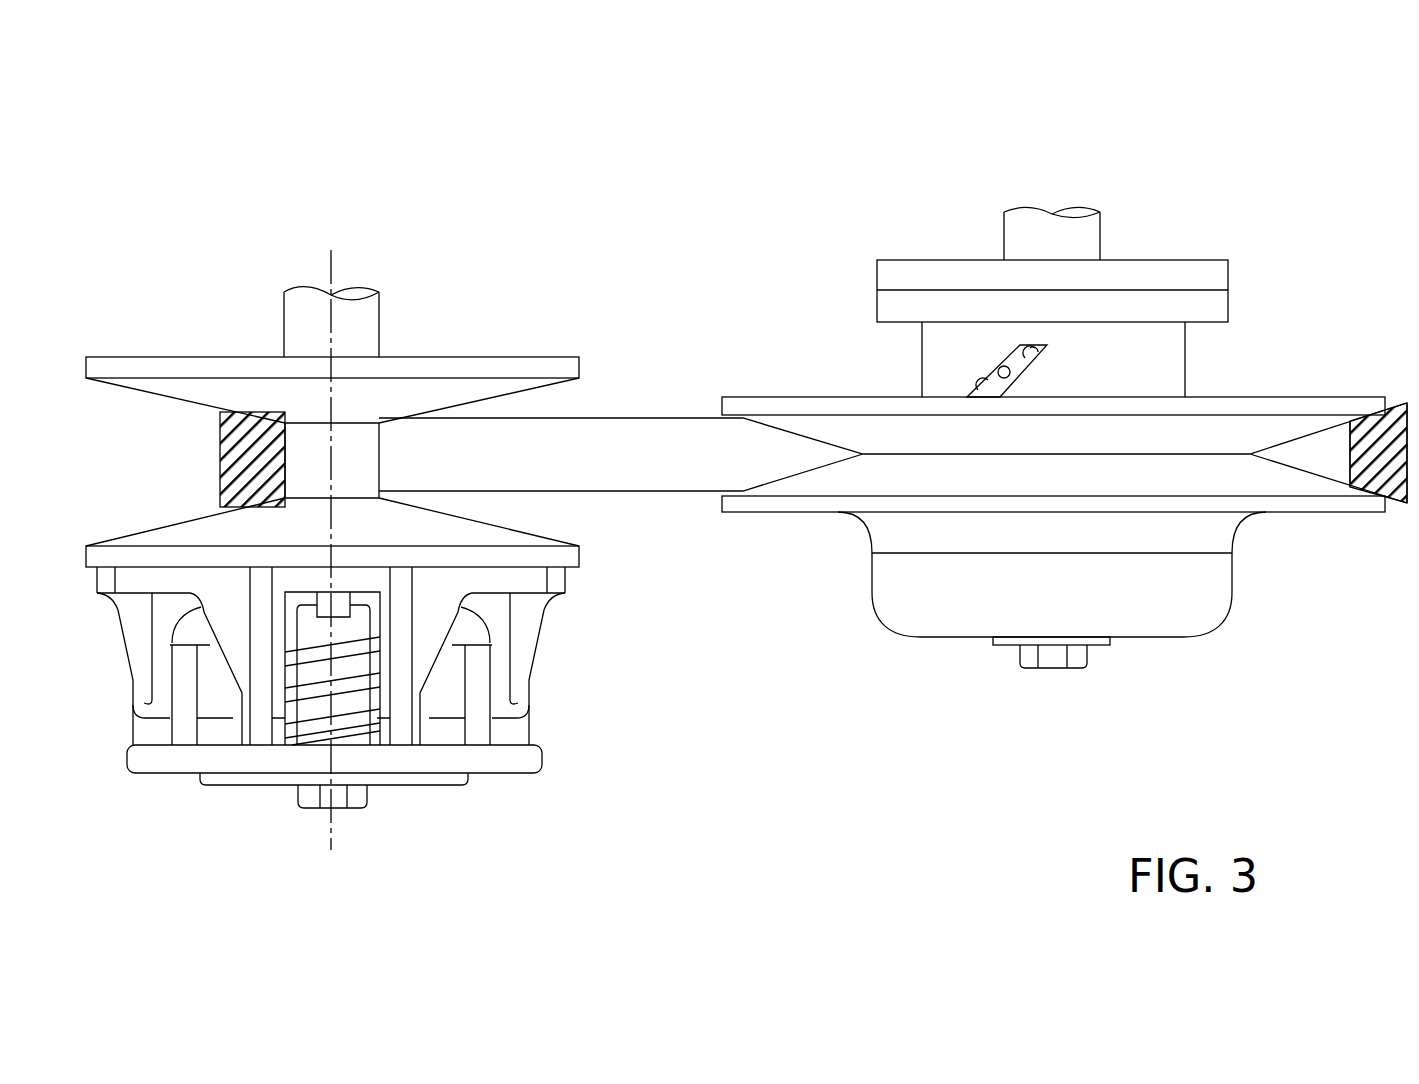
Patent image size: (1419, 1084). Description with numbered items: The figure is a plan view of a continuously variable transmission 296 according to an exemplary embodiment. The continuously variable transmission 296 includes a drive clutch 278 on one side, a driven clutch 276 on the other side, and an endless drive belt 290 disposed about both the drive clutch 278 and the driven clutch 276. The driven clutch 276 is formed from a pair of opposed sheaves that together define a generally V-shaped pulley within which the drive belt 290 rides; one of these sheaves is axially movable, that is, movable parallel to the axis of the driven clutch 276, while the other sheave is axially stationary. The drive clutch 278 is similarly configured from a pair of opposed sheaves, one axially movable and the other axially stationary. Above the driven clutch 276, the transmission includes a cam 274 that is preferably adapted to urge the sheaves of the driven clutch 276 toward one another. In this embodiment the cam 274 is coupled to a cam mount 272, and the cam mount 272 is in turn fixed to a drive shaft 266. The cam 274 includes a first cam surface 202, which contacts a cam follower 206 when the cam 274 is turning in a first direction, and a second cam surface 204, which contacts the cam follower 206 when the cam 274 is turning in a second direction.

The drive clutch 278 is at (513, 354).
The endless drive belt 290 is at (643, 416).
The driven clutch 276 is at (1320, 390).
The drive shaft 266 is at (1003, 230).
The cam mount 272 is at (1160, 258).
The cam 274 is at (1192, 347).
The first cam surface 202 is at (980, 385).
The cam follower 206 is at (1002, 366).
The second cam surface 204 is at (1047, 345).
The continuously variable transmission 296 is at (896, 772).